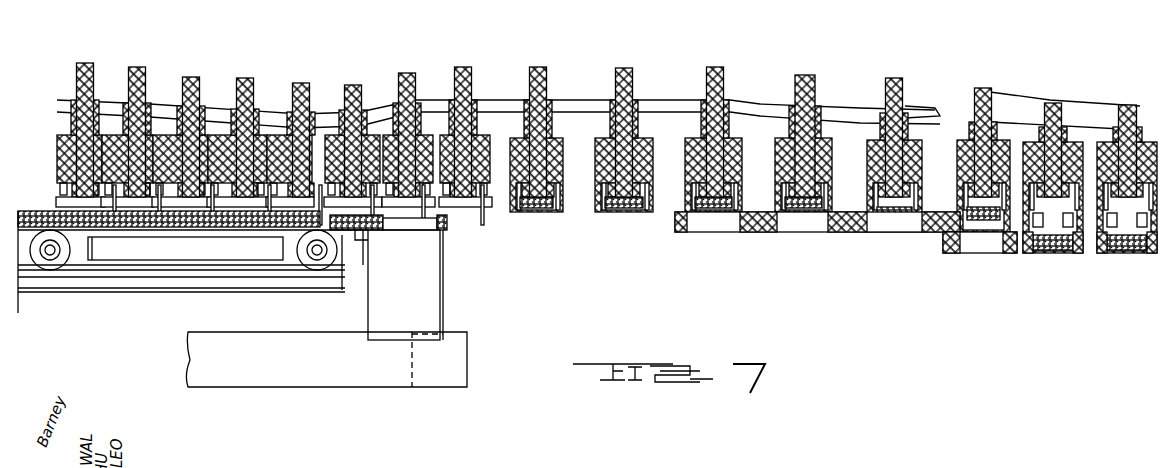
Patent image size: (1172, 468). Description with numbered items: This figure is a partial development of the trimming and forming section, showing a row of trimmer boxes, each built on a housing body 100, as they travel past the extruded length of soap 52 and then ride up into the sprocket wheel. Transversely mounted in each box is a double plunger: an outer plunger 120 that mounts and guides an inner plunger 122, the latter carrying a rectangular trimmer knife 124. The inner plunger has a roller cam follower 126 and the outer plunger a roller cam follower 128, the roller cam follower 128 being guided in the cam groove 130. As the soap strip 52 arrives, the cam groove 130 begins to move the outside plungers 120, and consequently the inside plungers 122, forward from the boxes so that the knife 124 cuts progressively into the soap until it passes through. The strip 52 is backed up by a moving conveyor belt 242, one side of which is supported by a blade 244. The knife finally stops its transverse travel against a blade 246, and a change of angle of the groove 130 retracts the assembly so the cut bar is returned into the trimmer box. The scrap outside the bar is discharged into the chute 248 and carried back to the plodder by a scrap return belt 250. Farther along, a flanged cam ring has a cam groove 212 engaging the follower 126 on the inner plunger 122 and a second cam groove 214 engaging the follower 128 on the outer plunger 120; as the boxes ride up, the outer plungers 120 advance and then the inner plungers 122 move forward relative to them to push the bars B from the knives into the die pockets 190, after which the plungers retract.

The extruded length of soap 52 is at (55, 212).
The housing body 100 is at (60, 151).
The outer plunger 120 is at (72, 106).
The inner plunger 122 is at (75, 123).
The trimmer knife 124 is at (63, 190).
The roller cam follower 126 is at (200, 80).
The roller cam follower 128 is at (254, 108).
The cam groove 130 is at (110, 103).
The die pocket 190 is at (1070, 250).
The cam groove 212 is at (1027, 100).
The cam groove 214 is at (920, 110).
The conveyor belt 242 is at (85, 270).
The blade 244 is at (210, 230).
The blade 246 is at (368, 238).
The chute 248 is at (443, 290).
The scrap return belt 250 is at (458, 362).
The bar B is at (632, 210).